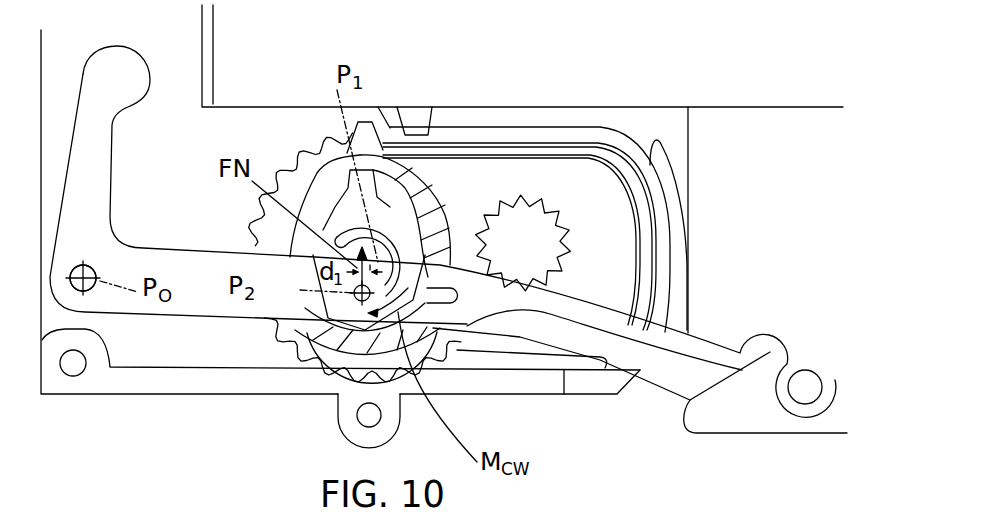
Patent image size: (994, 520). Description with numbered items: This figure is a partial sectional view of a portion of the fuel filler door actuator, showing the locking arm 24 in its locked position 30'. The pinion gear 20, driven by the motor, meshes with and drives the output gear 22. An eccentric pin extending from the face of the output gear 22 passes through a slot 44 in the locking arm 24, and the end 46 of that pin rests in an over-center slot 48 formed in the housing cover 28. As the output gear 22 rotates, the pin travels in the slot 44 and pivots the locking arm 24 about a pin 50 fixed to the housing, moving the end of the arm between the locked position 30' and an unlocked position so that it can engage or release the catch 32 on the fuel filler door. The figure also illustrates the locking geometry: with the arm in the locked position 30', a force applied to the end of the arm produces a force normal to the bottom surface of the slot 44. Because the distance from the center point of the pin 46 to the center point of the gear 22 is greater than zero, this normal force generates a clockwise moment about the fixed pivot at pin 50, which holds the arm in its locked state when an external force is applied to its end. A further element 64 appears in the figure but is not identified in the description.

The pinion gear 20 is at (552, 203).
The output gear 22 is at (453, 183).
The locking arm 24 is at (160, 248).
The housing cover 28 is at (338, 357).
The locked position 30' is at (799, 340).
The catch 32 is at (760, 434).
The slot 44 is at (450, 306).
The end of the eccentric pin 46 is at (303, 323).
The over-center slot 48 is at (330, 257).
The pin 50 is at (90, 288).
The tooth 64 is at (380, 108).